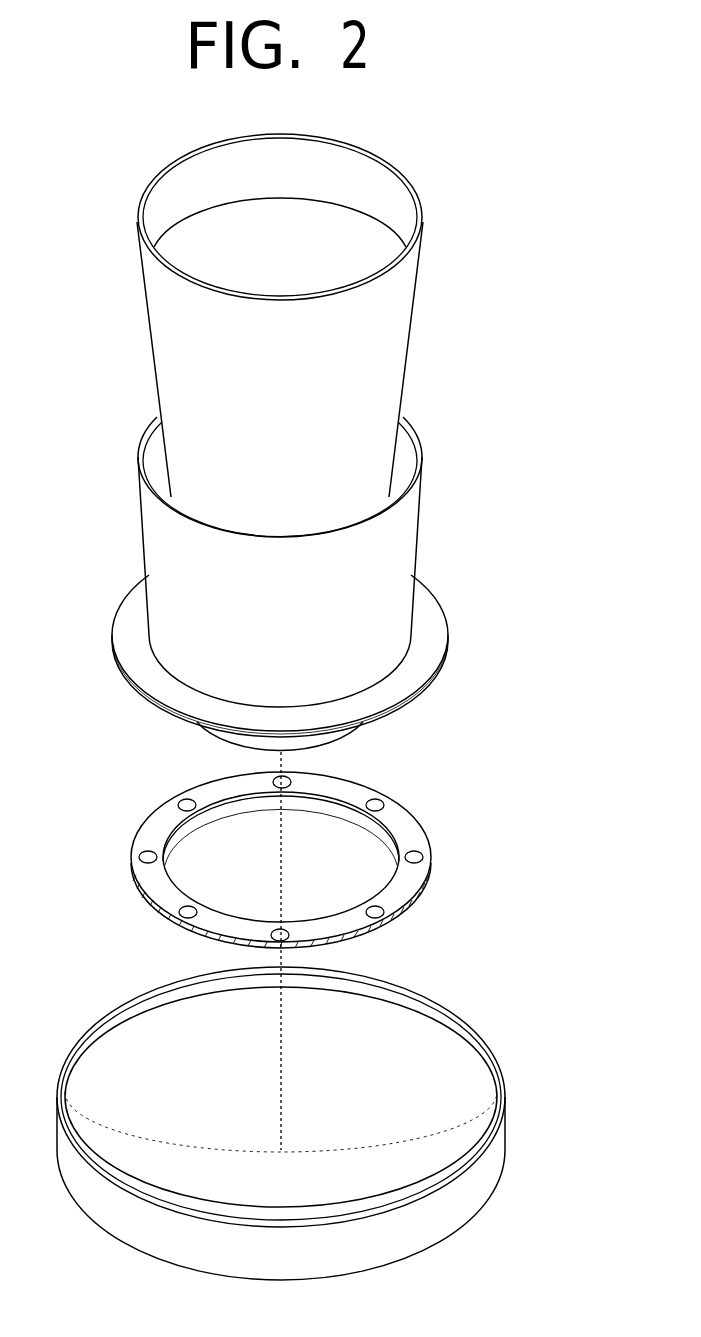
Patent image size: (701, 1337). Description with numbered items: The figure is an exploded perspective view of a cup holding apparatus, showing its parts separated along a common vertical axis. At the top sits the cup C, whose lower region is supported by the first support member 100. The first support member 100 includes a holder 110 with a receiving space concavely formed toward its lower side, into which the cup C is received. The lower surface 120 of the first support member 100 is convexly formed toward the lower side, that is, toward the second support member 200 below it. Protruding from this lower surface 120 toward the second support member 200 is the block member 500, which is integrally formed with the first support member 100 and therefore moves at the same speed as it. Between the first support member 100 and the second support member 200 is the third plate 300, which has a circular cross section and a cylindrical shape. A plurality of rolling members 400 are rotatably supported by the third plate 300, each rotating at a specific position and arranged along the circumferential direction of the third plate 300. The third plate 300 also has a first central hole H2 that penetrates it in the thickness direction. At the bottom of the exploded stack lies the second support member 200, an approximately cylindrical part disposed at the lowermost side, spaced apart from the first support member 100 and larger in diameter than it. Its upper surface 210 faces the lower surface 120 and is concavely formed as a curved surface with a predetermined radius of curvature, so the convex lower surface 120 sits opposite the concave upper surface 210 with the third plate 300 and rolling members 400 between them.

The cup C is at (393, 367).
The first support member 100 is at (326, 577).
The holder 110 is at (407, 518).
The lower surface 120 is at (442, 670).
The block member 500 is at (340, 740).
The third plate 300 is at (286, 860).
The rolling member 400 is at (188, 912).
The first central hole H2 is at (363, 873).
The second support member 200 is at (332, 1123).
The upper surface 210 is at (458, 1085).